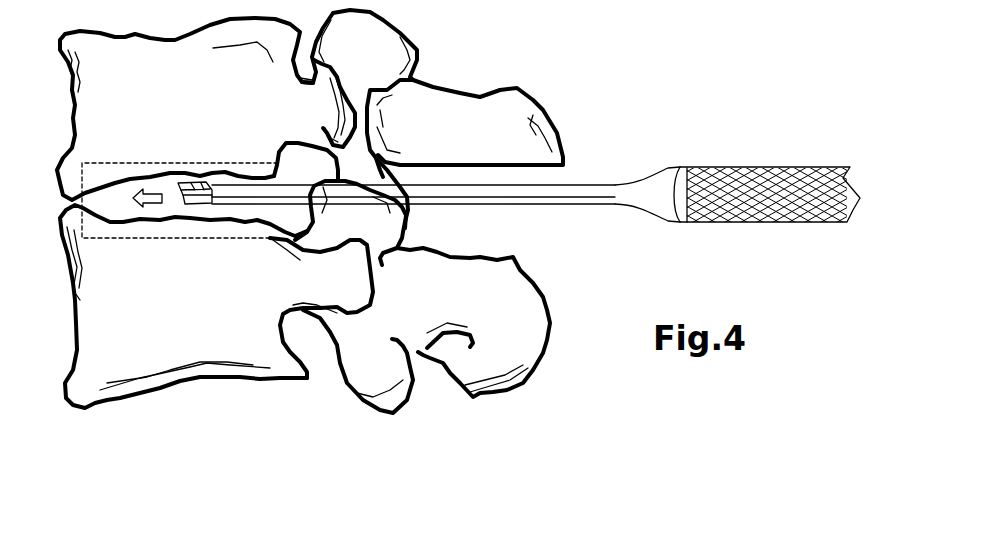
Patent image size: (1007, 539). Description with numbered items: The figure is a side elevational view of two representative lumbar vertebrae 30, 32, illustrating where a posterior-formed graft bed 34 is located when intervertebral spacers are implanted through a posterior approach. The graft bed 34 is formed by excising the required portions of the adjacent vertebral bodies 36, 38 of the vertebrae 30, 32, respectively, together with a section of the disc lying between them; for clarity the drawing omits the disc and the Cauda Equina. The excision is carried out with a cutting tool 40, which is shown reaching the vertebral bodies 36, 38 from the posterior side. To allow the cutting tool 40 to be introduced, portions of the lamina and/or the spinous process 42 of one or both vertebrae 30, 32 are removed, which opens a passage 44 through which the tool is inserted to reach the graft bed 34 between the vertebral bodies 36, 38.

The lumbar vertebra 30 is at (432, 43).
The lumbar vertebra 32 is at (320, 393).
The graft bed 34 is at (150, 157).
The vertebral body 36 is at (180, 62).
The vertebral body 38 is at (135, 357).
The cutting tool 40 is at (672, 195).
The spinous process 42 is at (533, 117).
The passage 44 is at (565, 179).